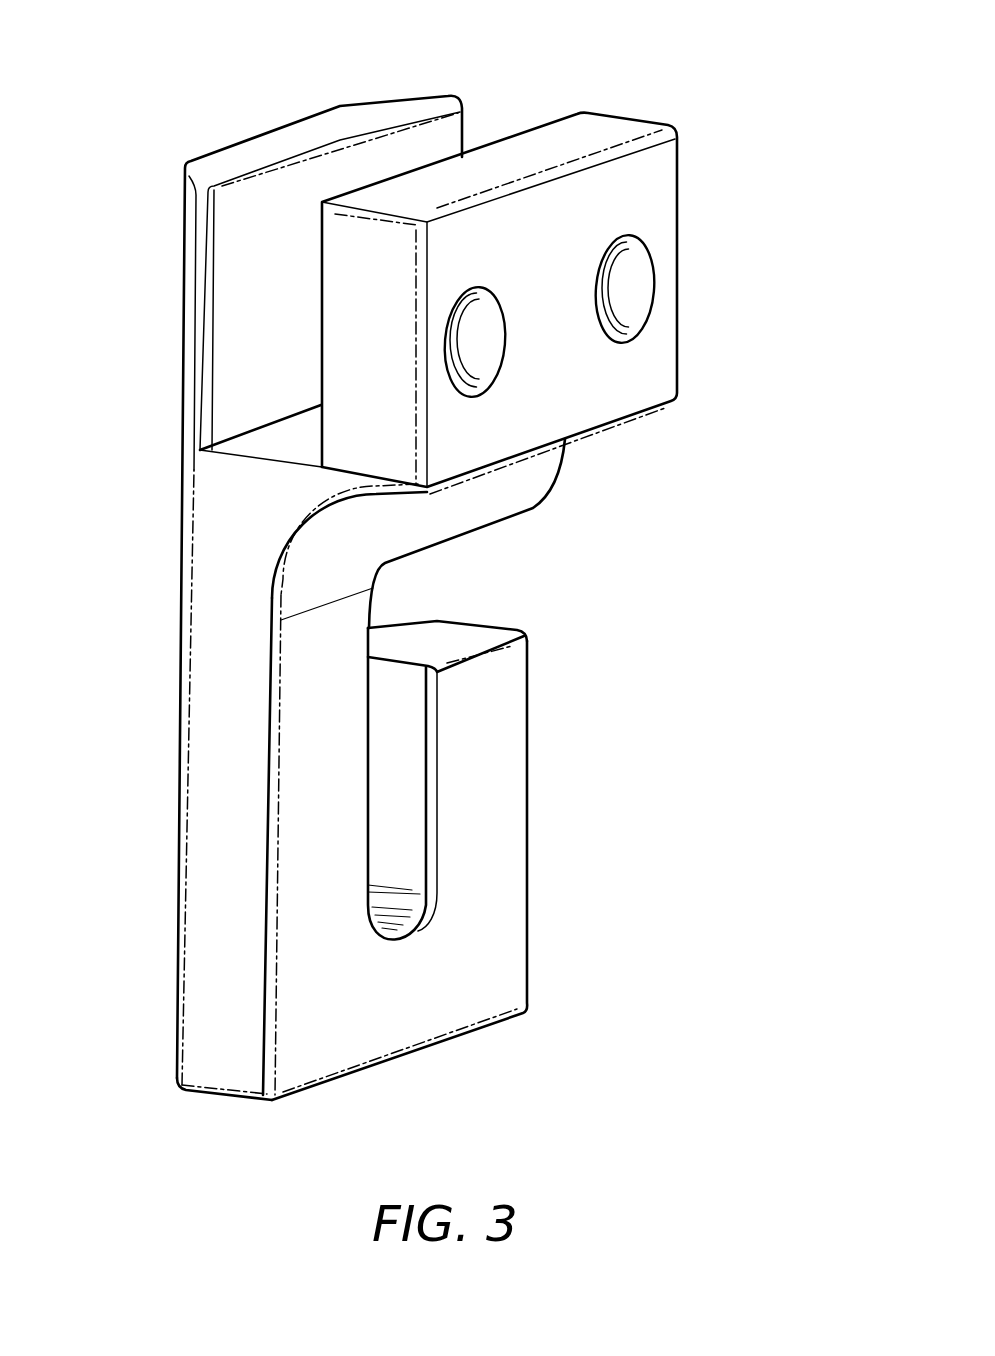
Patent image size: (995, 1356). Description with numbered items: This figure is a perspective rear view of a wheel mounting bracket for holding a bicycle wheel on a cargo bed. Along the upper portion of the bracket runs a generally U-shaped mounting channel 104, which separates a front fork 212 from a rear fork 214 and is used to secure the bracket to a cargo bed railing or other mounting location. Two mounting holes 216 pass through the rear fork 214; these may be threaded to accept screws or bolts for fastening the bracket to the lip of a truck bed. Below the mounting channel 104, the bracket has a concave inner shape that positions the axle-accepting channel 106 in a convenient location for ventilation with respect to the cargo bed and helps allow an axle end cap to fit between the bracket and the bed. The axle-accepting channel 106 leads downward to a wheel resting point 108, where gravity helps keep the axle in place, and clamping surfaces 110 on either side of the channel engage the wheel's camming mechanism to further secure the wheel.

The mounting channel 104 is at (290, 327).
The axle-accepting channel 106 is at (469, 585).
The wheel resting point 108 is at (408, 907).
The clamping surfaces 110 is at (343, 828).
The front fork 212 is at (436, 133).
The rear fork 214 is at (645, 400).
The mounting holes 216 is at (647, 290).